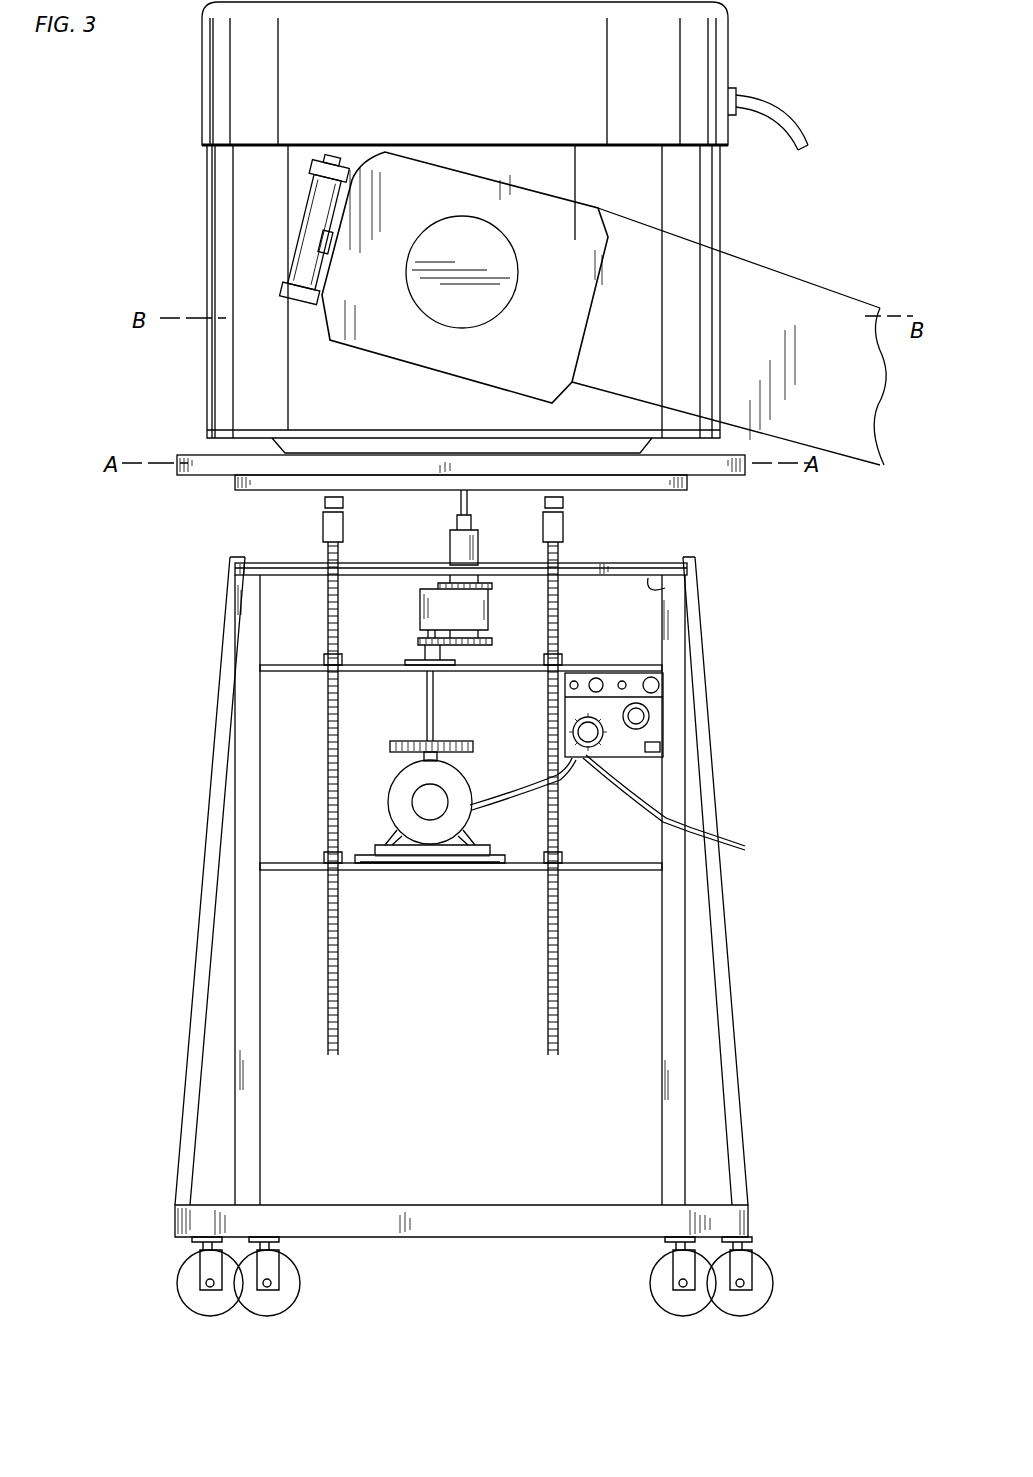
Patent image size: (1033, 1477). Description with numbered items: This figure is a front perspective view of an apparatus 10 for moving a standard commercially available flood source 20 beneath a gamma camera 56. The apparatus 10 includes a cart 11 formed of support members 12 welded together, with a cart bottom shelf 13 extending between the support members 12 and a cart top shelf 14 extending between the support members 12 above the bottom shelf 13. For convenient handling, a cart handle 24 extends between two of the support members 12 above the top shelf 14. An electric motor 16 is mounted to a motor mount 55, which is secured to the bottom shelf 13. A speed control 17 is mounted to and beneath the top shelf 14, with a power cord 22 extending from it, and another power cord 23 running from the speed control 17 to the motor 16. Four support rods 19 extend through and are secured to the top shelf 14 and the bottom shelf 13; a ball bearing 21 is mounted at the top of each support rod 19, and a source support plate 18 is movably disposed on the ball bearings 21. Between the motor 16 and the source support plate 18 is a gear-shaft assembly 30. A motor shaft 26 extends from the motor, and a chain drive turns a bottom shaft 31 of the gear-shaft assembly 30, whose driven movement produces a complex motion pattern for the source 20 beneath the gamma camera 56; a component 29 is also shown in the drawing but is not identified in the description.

The apparatus 10 is at (457, 876).
The cart 11 is at (470, 1203).
The support members 12 is at (680, 795).
The cart bottom shelf 13 is at (278, 853).
The cart top shelf 14 is at (288, 658).
The electric motor 16 is at (394, 792).
The speed control 17 is at (665, 715).
The source support plate 18 is at (258, 488).
The support rods 19 is at (326, 605).
The flood source 20 is at (712, 468).
The ball bearing 21 is at (323, 503).
The power cord 22 is at (758, 850).
The power cord 23 is at (525, 800).
The cart handle 24 is at (655, 588).
The motor shaft 26 is at (440, 757).
The pulley 29 is at (460, 744).
The gear-shaft assembly 30 is at (412, 622).
The bottom shaft 31 is at (426, 705).
The motor mount 55 is at (388, 870).
The gamma camera 56 is at (222, 376).